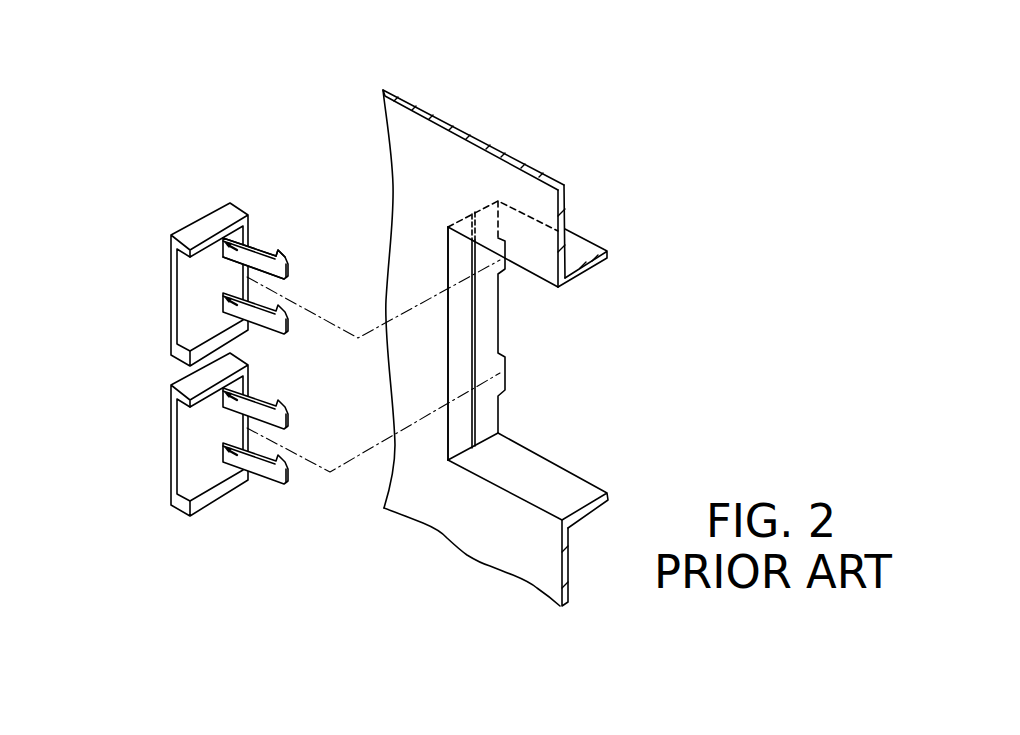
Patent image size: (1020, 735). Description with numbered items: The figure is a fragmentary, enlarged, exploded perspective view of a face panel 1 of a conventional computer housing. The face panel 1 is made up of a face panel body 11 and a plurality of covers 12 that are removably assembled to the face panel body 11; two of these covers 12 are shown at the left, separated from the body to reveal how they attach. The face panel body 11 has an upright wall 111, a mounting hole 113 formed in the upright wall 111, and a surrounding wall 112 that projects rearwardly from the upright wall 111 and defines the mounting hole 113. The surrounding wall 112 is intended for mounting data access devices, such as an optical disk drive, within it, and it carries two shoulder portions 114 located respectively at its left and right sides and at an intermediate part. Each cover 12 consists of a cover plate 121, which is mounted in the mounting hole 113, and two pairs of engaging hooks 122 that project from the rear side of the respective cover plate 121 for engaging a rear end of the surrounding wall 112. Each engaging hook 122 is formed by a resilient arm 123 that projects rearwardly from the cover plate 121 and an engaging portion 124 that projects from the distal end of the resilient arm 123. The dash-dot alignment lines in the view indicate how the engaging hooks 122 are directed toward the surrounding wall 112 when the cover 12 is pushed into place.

The face panel 1 is at (337, 111).
The face panel body 11 is at (438, 101).
The upright wall 111 is at (480, 170).
The surrounding wall 112 is at (533, 467).
The mounting hole 113 is at (450, 260).
The shoulder portion 114 is at (474, 305).
The cover 12 is at (164, 229).
The cover plate 121 is at (190, 292).
The engaging hook 122 is at (269, 249).
The resilient arm 123 is at (262, 262).
The engaging portion 124 is at (284, 257).